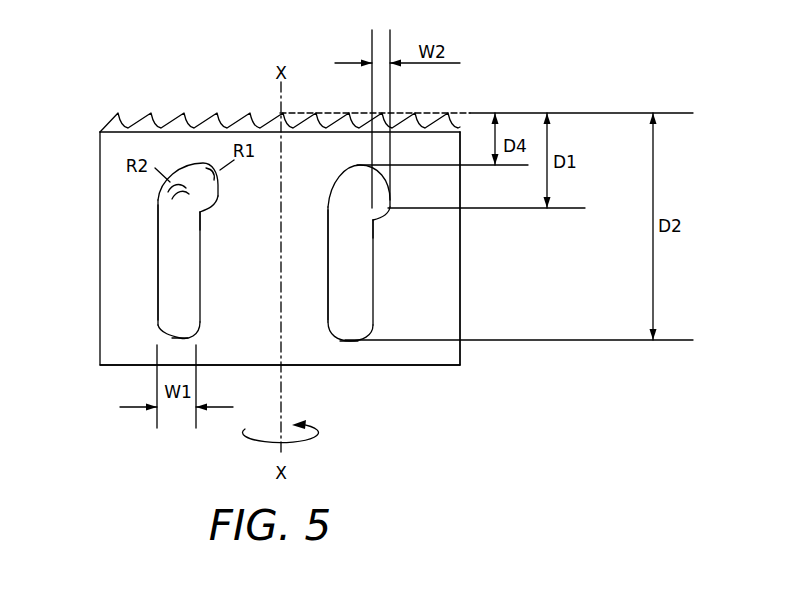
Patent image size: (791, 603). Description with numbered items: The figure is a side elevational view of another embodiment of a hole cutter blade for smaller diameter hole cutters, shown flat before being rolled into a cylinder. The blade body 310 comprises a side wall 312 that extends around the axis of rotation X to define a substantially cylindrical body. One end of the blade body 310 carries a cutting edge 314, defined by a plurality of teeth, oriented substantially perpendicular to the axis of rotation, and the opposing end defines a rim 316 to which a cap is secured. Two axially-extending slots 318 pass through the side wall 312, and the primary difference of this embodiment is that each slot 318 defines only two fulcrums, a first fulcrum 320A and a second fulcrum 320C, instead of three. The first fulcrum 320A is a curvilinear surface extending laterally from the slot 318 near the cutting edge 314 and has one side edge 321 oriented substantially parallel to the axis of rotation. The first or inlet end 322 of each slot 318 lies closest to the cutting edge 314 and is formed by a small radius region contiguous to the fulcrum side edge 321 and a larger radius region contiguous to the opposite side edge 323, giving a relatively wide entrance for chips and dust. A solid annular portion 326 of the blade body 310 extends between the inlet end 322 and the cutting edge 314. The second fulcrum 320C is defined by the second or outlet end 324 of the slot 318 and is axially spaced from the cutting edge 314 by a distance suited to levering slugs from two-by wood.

The blade body 310 is at (468, 244).
The side wall 312 is at (462, 352).
The cutting edge 314 is at (252, 130).
The rim 316 is at (447, 366).
The axially-extending slot 318 is at (158, 200).
The first fulcrum 320A is at (202, 213).
The second fulcrum 320C is at (180, 338).
The side edge 321 is at (221, 201).
The first end 322 is at (203, 162).
The side edge 323 is at (158, 250).
The second end 324 is at (178, 345).
The annular portion 326 is at (148, 145).